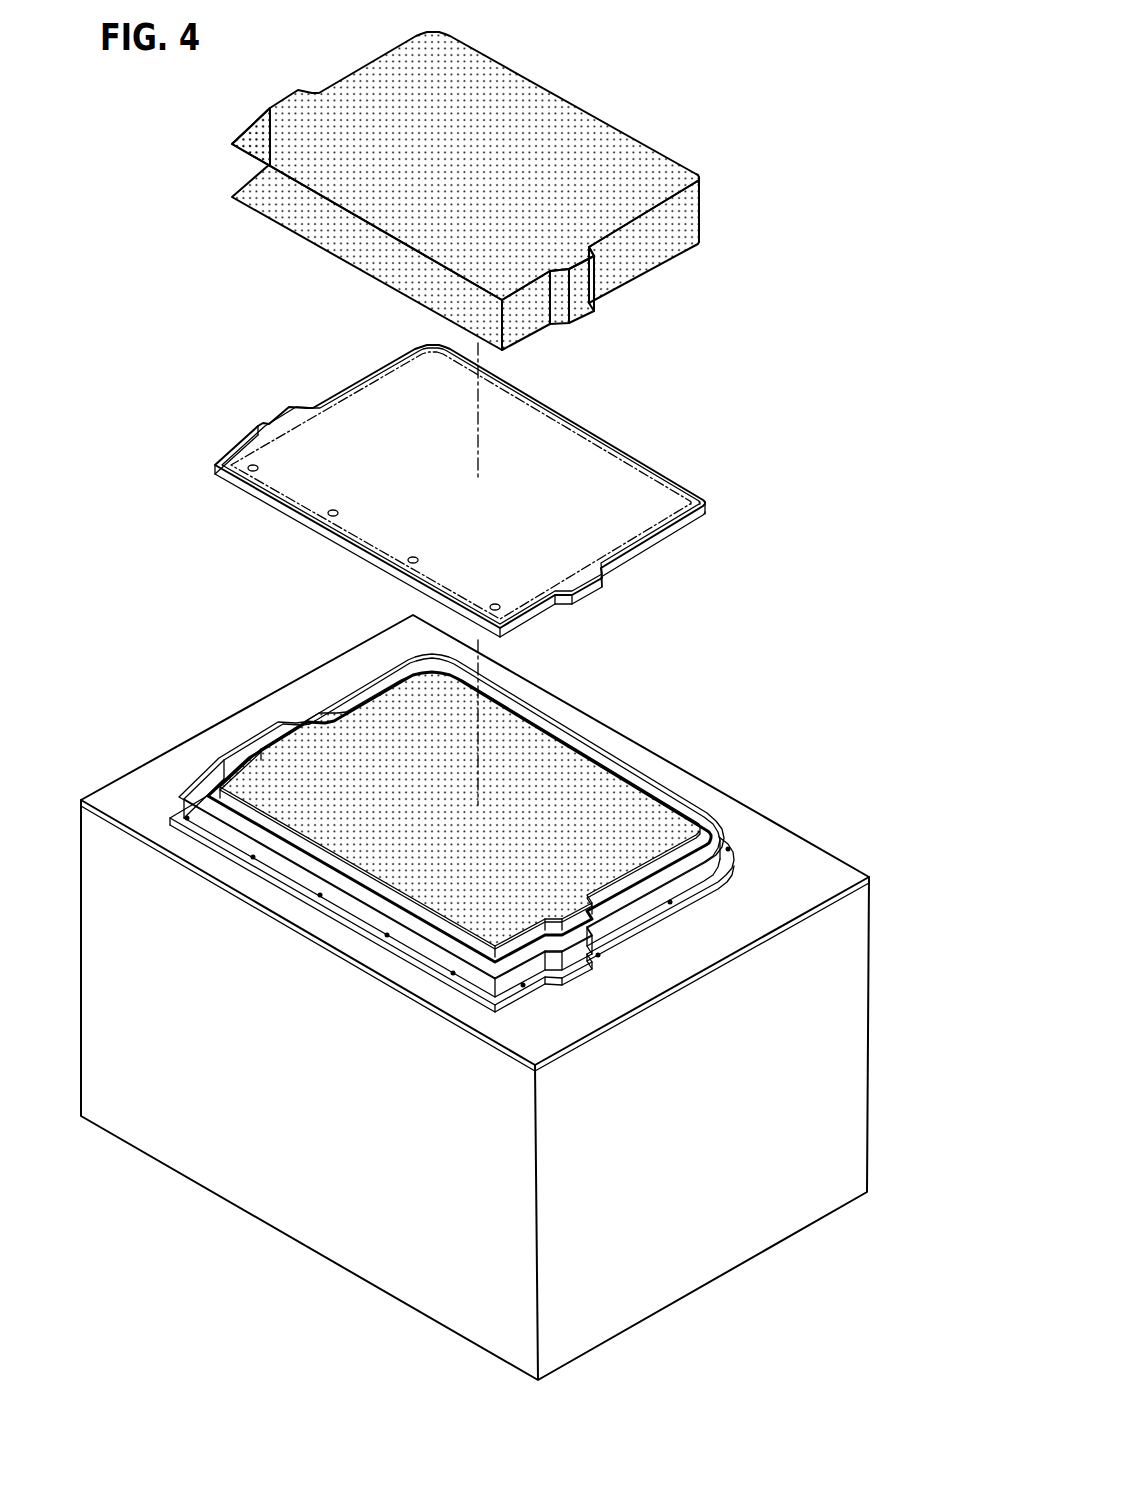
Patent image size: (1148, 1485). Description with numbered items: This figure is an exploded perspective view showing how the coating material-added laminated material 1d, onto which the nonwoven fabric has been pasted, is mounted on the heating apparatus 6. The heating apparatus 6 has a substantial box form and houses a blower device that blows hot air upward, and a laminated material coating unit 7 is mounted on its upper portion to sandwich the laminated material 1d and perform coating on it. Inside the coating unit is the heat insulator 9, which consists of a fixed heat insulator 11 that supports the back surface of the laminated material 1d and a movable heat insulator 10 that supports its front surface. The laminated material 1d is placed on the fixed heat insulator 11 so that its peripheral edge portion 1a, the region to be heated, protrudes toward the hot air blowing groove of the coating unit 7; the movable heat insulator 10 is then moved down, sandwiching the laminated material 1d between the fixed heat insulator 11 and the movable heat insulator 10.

The movable heat insulator 10 is at (627, 178).
The heat insulator 9 is at (452, 833).
The fixed heat insulator 11 is at (630, 800).
The coating material-added laminated material 1d is at (657, 462).
The peripheral edge portion 1a is at (710, 497).
The laminated material coating unit 7 is at (838, 900).
The heating apparatus 6 is at (793, 1235).